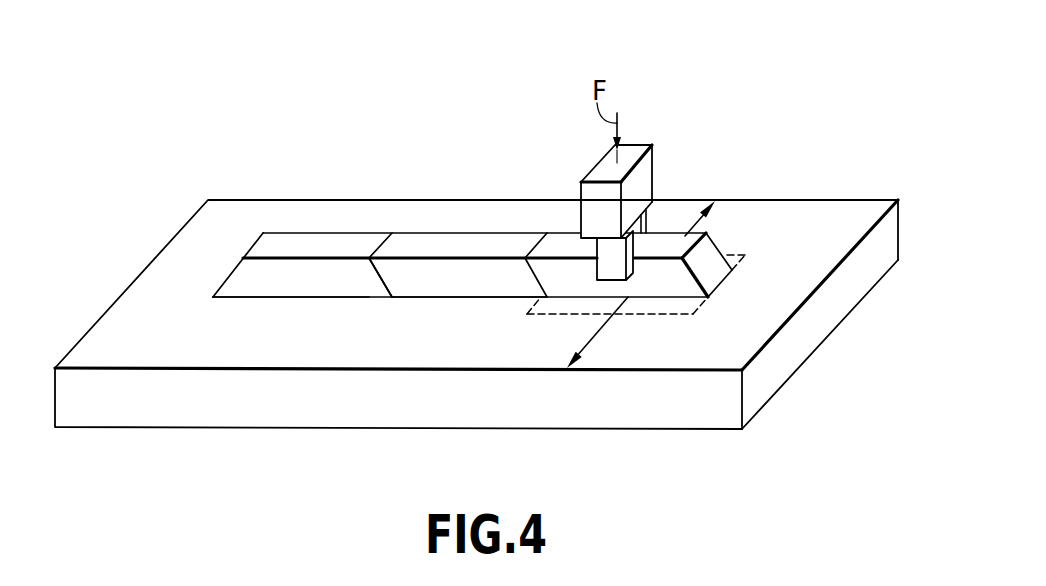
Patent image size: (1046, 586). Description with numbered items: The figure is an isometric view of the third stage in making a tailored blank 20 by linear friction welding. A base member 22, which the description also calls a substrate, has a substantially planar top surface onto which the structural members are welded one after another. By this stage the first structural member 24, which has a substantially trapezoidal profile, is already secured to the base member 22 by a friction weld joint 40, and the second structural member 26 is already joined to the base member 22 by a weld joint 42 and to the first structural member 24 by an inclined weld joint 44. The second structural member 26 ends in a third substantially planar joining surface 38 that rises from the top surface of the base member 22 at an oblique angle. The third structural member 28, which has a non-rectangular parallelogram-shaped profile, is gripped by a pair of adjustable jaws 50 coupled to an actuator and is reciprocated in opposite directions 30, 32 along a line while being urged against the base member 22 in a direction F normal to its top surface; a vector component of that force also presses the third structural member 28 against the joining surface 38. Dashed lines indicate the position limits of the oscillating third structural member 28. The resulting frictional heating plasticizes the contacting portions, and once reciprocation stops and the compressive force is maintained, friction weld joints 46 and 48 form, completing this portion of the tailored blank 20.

The tailored blank 20 is at (638, 62).
The base member 22 is at (777, 202).
The first structural member 24 is at (255, 248).
The second structural member 26 is at (400, 243).
The third structural member 28 is at (658, 245).
The direction 30 is at (693, 233).
The direction 32 is at (590, 342).
The third substantially planar joining surface 38 is at (715, 268).
The friction weld joint 40 is at (260, 297).
The weld joint 42 is at (482, 296).
The inclined weld joint 44 is at (387, 280).
The friction weld joint 46 is at (550, 260).
The friction weld joint 48 is at (632, 297).
The adjustable jaws 50 is at (653, 154).